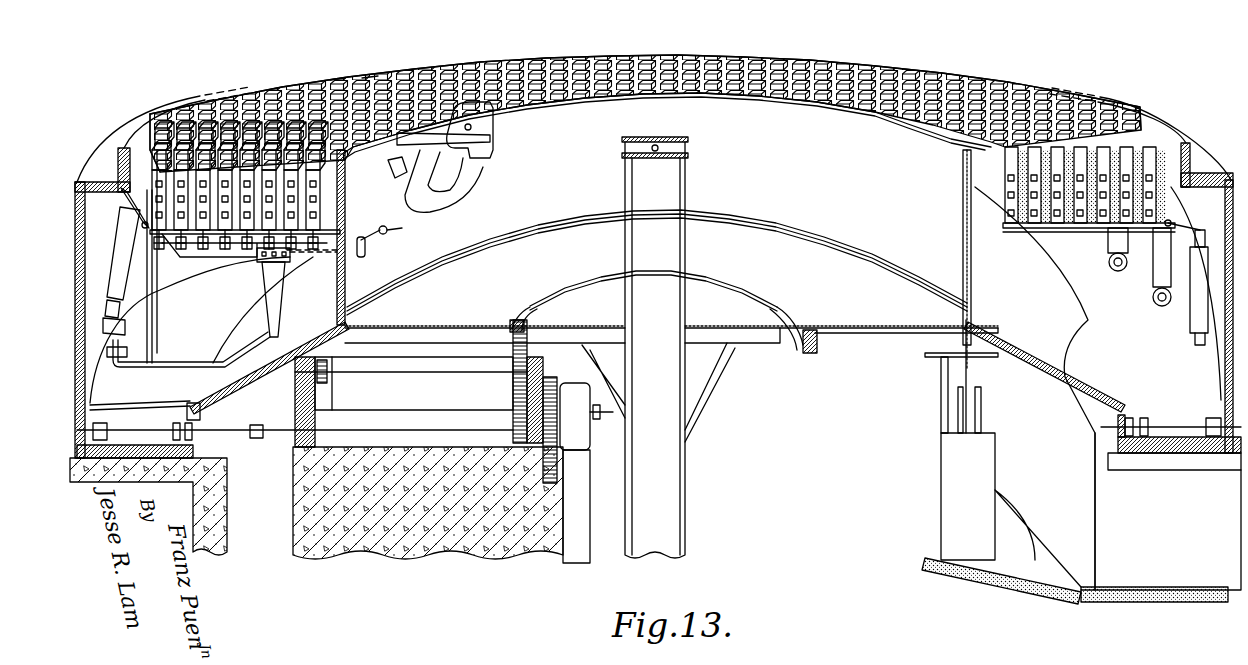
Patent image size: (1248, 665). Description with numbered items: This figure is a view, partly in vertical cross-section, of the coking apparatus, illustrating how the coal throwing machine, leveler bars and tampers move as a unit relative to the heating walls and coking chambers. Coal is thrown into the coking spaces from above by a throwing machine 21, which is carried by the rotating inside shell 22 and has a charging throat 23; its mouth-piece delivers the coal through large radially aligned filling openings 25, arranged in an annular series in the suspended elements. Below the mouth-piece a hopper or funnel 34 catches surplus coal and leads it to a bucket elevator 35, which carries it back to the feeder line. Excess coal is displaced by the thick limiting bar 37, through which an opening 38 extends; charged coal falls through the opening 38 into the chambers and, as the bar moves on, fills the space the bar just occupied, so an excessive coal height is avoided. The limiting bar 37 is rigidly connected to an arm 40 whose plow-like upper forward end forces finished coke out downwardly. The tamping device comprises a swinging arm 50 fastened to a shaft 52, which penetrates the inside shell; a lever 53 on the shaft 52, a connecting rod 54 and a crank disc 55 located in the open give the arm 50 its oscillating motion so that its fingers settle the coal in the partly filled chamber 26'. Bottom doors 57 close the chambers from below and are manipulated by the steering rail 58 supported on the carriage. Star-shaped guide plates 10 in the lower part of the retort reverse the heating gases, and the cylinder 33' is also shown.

The guide plates 10 is at (213, 197).
The throwing machine 21 is at (482, 127).
The rotating inside shell 22 is at (350, 283).
The charging throat 23 is at (413, 137).
The filling openings 25 is at (187, 110).
The coking chamber 26' is at (571, 298).
The cylinder 33' is at (93, 262).
The hopper or funnel 34 is at (397, 170).
The bucket elevator 35 is at (427, 167).
The limiting bar 37 is at (340, 78).
The opening 38 is at (370, 76).
The arm 40 is at (200, 167).
The swinging arm 50 is at (347, 157).
The shaft 52 is at (320, 254).
The lever 53 is at (373, 246).
The connecting rod 54 is at (363, 236).
The crank disc 55 is at (380, 232).
The bottom doors 57 is at (1065, 225).
The steering rail 58 is at (107, 320).